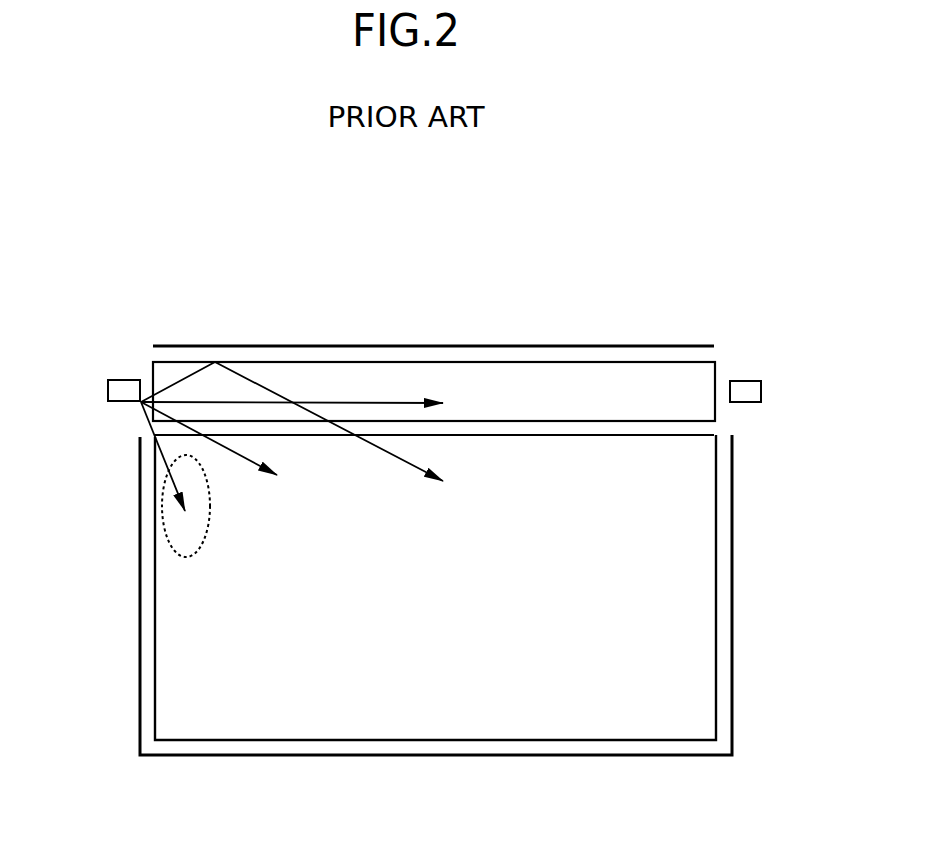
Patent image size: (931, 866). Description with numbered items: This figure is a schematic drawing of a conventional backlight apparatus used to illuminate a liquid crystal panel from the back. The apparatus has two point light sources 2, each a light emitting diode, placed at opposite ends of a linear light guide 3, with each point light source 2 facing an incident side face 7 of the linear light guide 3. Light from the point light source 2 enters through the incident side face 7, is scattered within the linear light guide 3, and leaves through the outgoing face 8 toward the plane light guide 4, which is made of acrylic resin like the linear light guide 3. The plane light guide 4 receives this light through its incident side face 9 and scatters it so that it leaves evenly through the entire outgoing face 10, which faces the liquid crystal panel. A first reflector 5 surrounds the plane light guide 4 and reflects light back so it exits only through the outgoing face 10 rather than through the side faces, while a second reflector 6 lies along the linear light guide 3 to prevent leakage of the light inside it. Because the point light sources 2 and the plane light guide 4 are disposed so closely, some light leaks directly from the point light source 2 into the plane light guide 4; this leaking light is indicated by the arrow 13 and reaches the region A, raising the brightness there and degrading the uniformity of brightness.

The point light source 2 is at (108, 393).
The linear light guide 3 is at (525, 392).
The plane light guide 4 is at (688, 636).
The first reflector 5 is at (733, 728).
The second reflector 6 is at (397, 345).
The incident side face 7 is at (153, 373).
The outgoing face 8 is at (687, 423).
The incident side face 9 is at (567, 435).
The outgoing face 10 is at (702, 563).
The arrow 13 is at (140, 404).
The region A is at (208, 533).